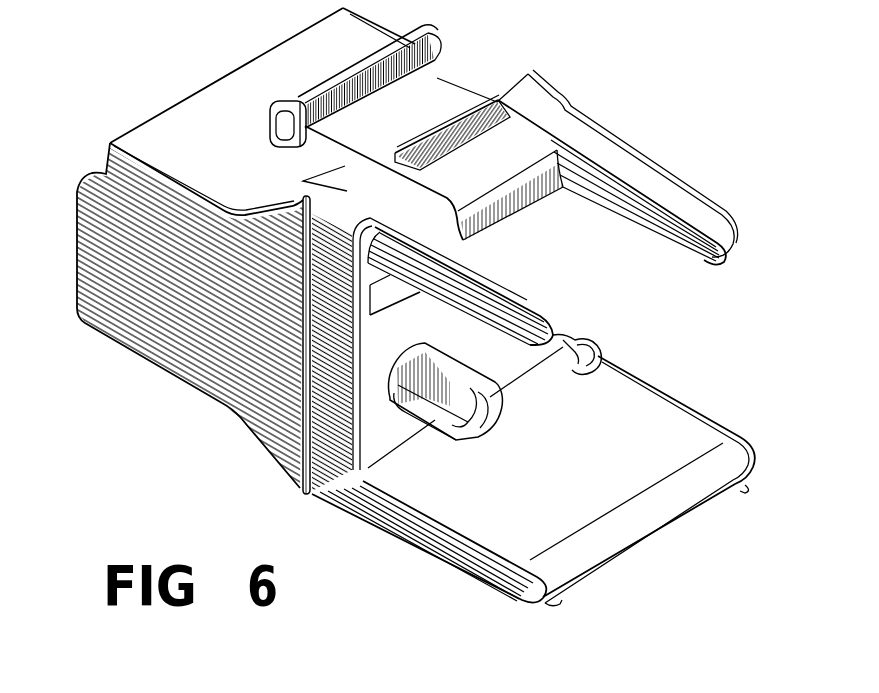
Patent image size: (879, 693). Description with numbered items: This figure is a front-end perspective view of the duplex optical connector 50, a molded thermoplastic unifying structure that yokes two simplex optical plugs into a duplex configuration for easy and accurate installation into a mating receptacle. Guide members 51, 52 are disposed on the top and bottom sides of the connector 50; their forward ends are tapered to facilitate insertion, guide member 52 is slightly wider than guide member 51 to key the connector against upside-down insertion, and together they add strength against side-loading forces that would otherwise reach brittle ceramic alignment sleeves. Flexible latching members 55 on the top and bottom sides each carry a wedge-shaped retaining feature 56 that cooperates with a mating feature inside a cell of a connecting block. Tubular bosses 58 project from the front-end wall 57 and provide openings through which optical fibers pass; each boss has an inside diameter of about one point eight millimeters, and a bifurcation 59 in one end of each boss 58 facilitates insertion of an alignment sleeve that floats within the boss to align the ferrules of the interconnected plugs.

The duplex optical connector 50 is at (148, 66).
The guide member 51 is at (640, 220).
The guide member 52 is at (653, 423).
The flexible latching member 55 is at (436, 82).
The wedge-shaped retaining feature 56 is at (492, 112).
The front-end wall 57 is at (375, 445).
The boss 58 is at (585, 370).
The bifurcation 59 is at (428, 410).